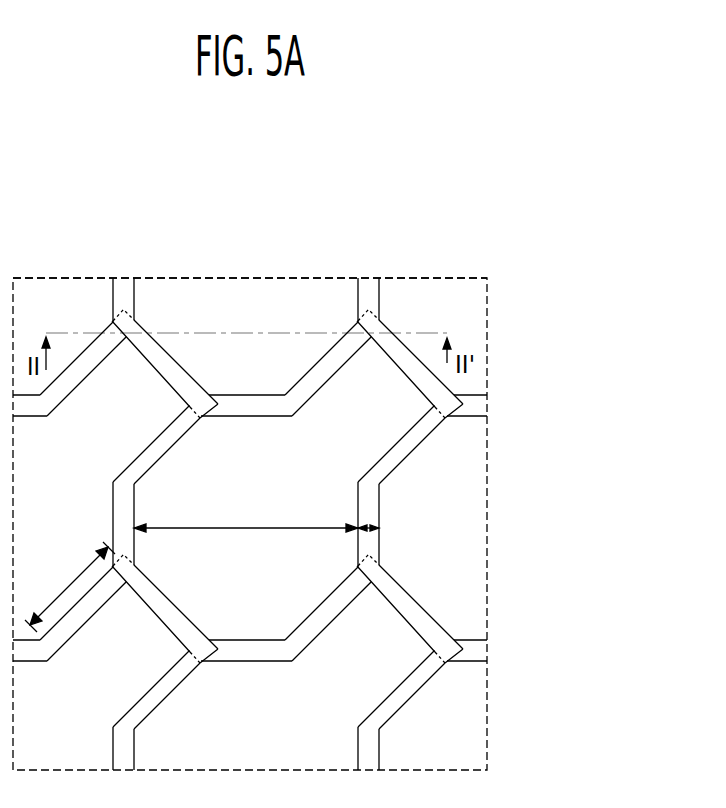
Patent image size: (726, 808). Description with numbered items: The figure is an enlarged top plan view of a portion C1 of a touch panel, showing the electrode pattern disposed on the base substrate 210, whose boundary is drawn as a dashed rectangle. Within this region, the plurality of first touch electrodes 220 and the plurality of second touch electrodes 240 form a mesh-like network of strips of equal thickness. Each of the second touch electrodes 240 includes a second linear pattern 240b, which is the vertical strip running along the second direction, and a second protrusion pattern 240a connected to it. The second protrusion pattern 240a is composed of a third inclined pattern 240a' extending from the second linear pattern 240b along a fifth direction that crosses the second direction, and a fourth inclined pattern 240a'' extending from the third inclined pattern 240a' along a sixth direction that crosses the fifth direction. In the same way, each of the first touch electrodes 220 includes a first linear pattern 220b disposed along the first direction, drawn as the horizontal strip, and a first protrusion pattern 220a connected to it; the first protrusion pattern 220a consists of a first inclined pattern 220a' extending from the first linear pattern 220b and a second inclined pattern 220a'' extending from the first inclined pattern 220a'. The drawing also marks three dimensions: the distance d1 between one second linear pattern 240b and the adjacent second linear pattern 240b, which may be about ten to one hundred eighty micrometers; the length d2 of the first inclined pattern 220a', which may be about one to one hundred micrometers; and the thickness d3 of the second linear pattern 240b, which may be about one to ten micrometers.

The base substrate 210 is at (455, 297).
The portion C1 is at (310, 278).
The first touch electrodes 220 is at (629, 565).
The first protrusion pattern 220a is at (457, 602).
The first inclined pattern 220a' is at (424, 603).
The second inclined pattern 220a'' is at (462, 609).
The first linear pattern 220b is at (475, 639).
The second touch electrodes 240 is at (243, 172).
The second protrusion pattern 240a is at (193, 326).
The third inclined pattern 240a' is at (165, 312).
The fourth inclined pattern 240a'' is at (194, 345).
The second linear pattern 240b is at (133, 298).
The distance between adjacent second linear patterns d1 is at (246, 517).
The length of the first inclined pattern d2 is at (70, 587).
The thickness of the second linear pattern d3 is at (378, 524).